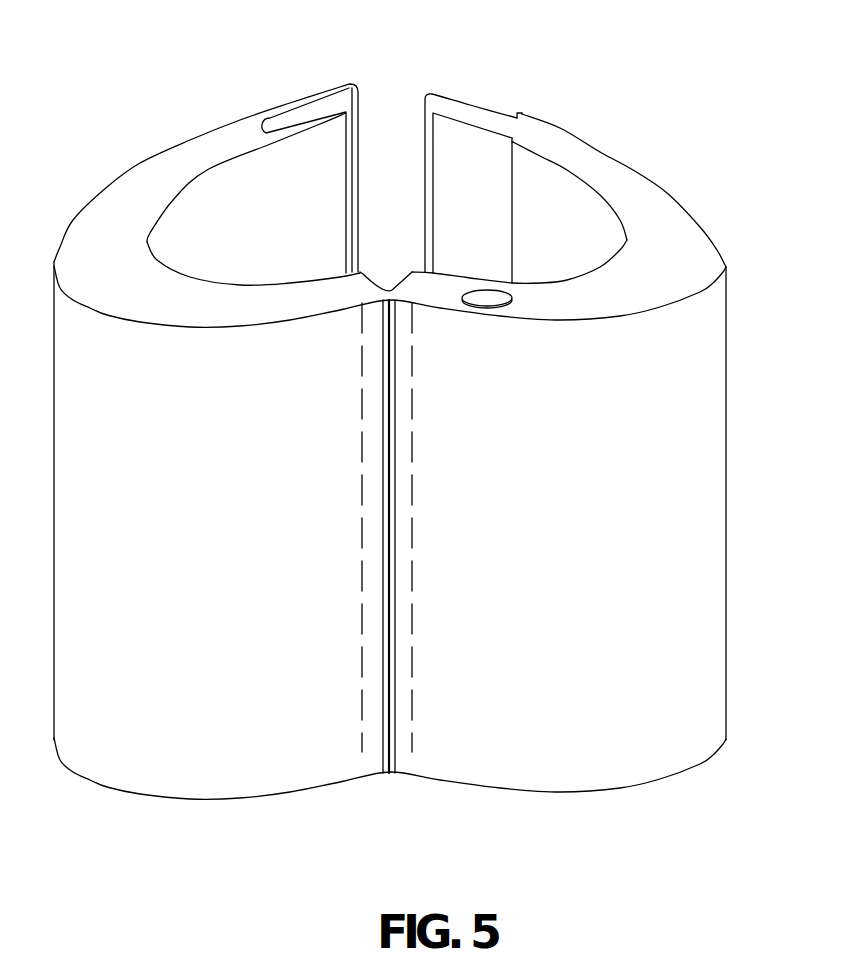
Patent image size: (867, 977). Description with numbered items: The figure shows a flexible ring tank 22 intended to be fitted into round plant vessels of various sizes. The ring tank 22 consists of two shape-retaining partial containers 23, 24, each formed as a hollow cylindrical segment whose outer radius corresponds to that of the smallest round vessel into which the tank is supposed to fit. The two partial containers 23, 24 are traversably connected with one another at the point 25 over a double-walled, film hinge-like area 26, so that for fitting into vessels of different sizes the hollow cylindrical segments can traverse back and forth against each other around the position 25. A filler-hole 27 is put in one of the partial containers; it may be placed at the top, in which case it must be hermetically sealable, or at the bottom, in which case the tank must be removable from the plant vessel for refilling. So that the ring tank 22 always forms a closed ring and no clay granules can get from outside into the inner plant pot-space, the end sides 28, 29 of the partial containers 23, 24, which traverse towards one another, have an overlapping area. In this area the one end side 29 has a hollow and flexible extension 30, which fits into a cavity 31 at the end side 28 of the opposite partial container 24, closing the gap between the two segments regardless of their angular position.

The flexible ring tank 22 is at (693, 495).
The partial container 23 is at (566, 654).
The partial container 24 is at (189, 569).
The point 25 is at (387, 270).
The film hinge-like area 26 is at (388, 477).
The filler-hole 27 is at (497, 305).
The end side 28 is at (352, 82).
The end side 29 is at (519, 112).
The hollow and flexible extension 30 is at (489, 229).
The cavity 31 is at (346, 103).